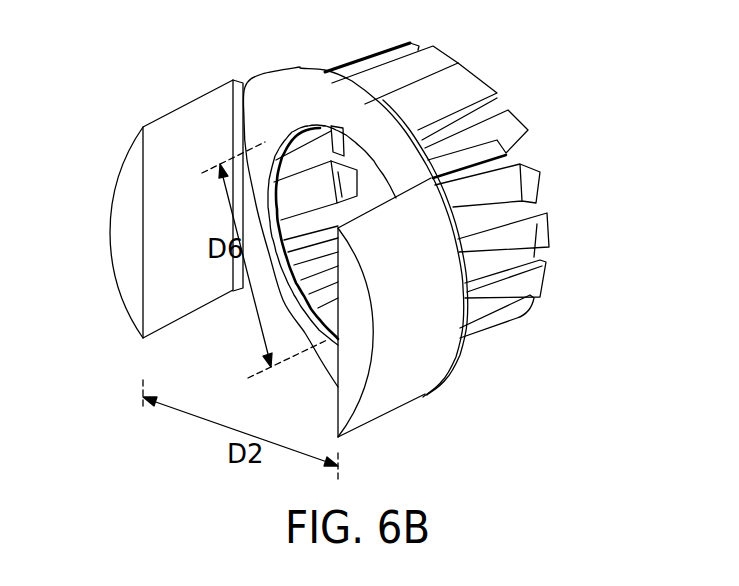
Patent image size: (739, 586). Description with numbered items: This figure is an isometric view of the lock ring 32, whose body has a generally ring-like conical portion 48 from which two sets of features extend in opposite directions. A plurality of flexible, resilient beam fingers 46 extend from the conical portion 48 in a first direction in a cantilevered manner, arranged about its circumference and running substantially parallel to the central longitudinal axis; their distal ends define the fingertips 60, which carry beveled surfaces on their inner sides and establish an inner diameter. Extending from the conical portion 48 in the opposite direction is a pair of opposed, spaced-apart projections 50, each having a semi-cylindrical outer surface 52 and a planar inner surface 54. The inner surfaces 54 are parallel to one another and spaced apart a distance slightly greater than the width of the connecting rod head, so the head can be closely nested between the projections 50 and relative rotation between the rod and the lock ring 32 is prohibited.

The lock ring 32 is at (149, 72).
The beam fingers 46 is at (530, 328).
The conical portion 48 is at (288, 66).
The projections 50 is at (126, 221).
The outer surface 52 is at (427, 310).
The inner surface 54 is at (185, 296).
The fingertips 60 is at (514, 133).